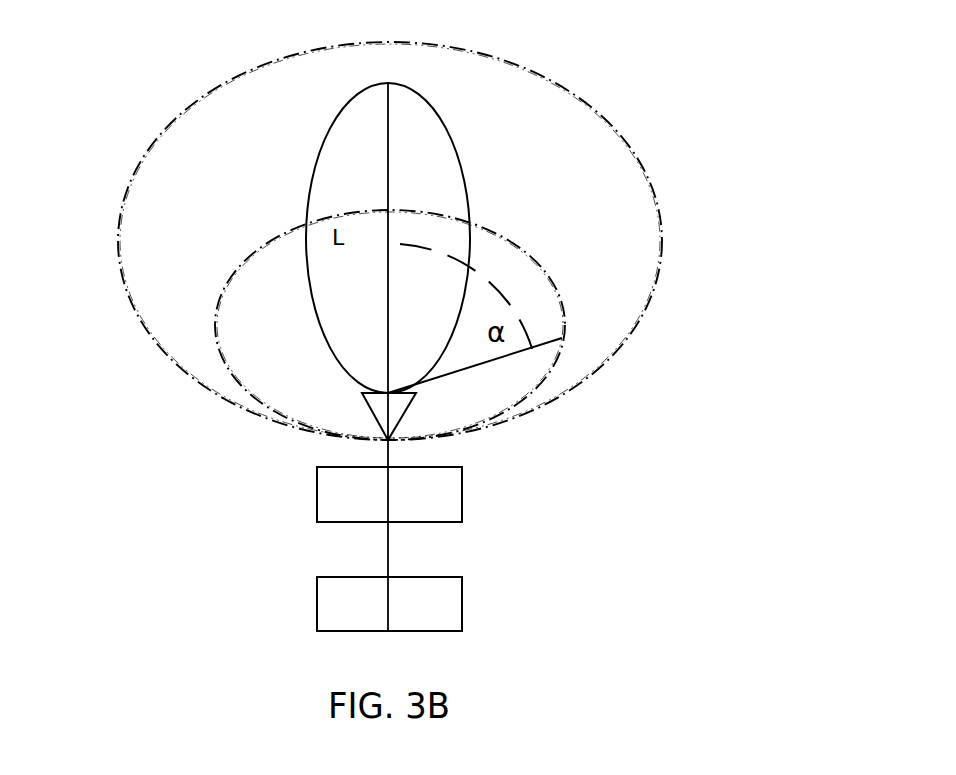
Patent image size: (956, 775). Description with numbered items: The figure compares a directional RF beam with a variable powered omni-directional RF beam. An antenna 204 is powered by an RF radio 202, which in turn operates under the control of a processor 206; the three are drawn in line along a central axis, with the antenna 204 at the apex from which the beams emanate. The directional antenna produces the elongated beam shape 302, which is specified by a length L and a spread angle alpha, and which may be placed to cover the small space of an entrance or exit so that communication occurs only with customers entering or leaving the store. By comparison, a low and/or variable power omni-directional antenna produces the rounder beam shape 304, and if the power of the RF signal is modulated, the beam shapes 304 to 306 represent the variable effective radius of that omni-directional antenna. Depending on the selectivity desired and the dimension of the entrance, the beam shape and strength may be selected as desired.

The RF radio 202 is at (407, 502).
The antenna 204 is at (365, 424).
The processor 206 is at (407, 612).
The directional RF beam 302 is at (308, 192).
The beam shape 304 is at (213, 320).
The beam shape 306 is at (108, 202).